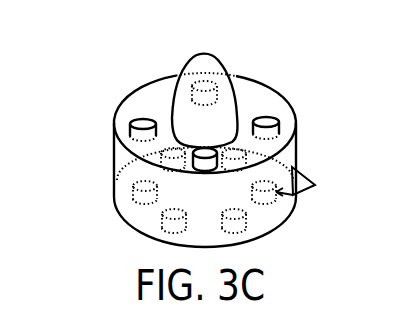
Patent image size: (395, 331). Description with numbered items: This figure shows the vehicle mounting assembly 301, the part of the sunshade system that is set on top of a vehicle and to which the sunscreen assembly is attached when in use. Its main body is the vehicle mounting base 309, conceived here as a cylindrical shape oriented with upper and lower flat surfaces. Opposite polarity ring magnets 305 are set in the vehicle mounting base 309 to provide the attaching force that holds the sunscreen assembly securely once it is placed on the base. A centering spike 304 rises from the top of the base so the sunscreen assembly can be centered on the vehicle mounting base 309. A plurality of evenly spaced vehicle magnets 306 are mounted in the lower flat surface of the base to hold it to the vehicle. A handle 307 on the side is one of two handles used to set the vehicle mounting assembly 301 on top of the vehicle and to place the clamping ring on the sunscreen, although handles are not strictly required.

The vehicle mounting assembly 301 is at (98, 45).
The centering spike 304 is at (213, 62).
The opposite polarity ring magnets 305 is at (268, 120).
The vehicle magnets 306 is at (240, 230).
The handle 307 is at (308, 193).
The vehicle mounting base 309 is at (114, 170).